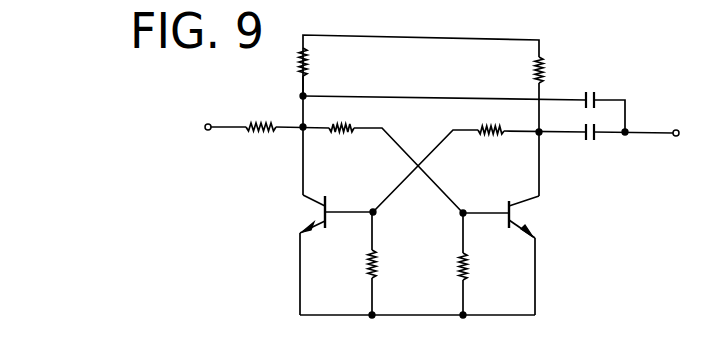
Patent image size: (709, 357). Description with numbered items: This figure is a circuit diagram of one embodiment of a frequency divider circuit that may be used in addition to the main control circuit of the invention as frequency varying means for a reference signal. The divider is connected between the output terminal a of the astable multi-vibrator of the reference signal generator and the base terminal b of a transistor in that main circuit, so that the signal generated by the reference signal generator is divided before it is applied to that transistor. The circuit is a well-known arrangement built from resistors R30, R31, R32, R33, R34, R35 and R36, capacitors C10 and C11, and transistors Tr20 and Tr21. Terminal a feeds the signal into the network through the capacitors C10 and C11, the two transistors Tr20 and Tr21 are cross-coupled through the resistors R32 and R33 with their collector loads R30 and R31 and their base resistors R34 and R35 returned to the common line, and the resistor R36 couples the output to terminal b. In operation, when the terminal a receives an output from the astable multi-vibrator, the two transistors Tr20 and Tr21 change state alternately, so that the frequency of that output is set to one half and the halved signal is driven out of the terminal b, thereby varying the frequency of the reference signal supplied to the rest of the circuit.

The resistor R30 is at (325, 62).
The resistor R31 is at (520, 73).
The resistor R32 is at (345, 143).
The resistor R33 is at (495, 146).
The resistor R34 is at (393, 263).
The resistor R35 is at (484, 264).
The resistor R36 is at (261, 113).
The capacitor C10 is at (592, 89).
The capacitor C11 is at (590, 147).
The transistor Tr20 is at (314, 204).
The transistor Tr21 is at (504, 204).
The output terminal a is at (676, 118).
The base terminal b is at (207, 108).